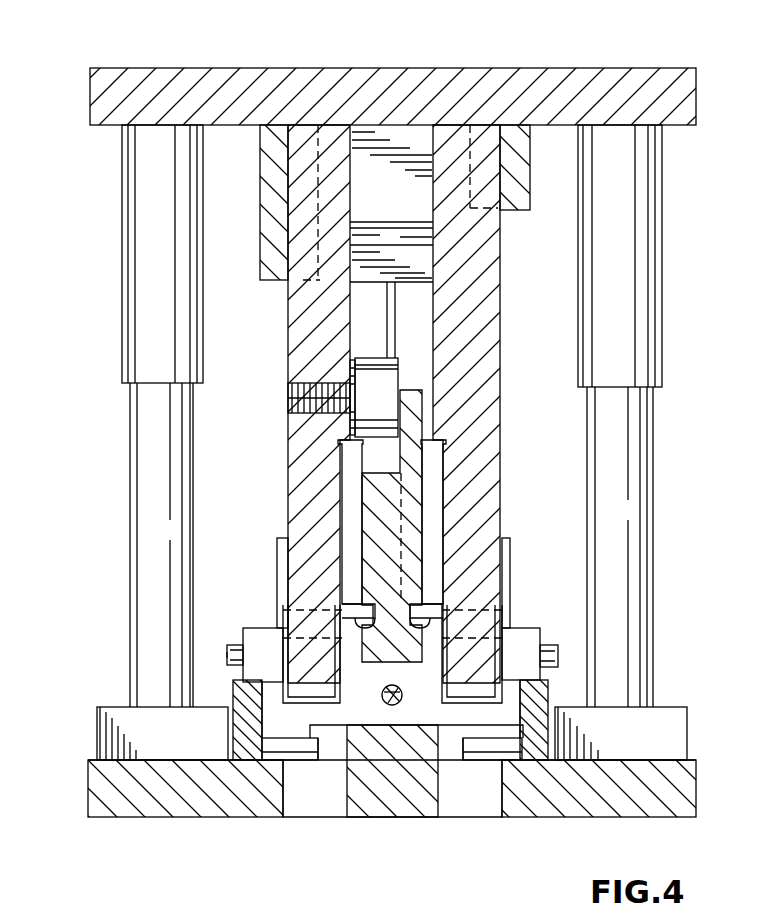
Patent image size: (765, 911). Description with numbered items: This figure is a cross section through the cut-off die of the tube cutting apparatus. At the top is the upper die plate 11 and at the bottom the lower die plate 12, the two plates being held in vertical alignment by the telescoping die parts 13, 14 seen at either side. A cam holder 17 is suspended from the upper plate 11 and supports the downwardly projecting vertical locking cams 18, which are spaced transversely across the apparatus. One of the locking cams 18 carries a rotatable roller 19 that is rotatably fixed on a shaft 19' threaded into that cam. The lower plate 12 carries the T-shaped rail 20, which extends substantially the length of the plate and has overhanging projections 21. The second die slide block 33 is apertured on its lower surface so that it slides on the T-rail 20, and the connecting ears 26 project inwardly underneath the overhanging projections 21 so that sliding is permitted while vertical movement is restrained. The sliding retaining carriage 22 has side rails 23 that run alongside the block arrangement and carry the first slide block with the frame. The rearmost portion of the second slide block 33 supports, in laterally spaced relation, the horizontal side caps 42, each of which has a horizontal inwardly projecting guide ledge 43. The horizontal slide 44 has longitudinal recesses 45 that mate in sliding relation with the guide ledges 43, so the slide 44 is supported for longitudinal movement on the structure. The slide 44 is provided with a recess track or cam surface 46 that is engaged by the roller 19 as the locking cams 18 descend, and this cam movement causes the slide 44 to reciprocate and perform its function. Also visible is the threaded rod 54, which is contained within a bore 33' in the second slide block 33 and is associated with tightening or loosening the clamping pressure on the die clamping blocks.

The upper die plate 11 is at (424, 78).
The lower die plate 12 is at (185, 797).
The telescoping die part 13 is at (152, 240).
The telescoping die part 14 is at (148, 528).
The cam holder 17 is at (268, 135).
The locking cam 18 is at (290, 322).
The roller 19 is at (389, 359).
The shaft 19' is at (291, 387).
The T-shaped rail 20 is at (332, 740).
The overhanging projection 21 is at (310, 727).
The retaining carriage 22 is at (552, 687).
The side rail 23 is at (246, 750).
The connecting ear 26 is at (300, 748).
The second die slide block 33 is at (407, 663).
The bore 33' is at (412, 707).
The side cap 42 is at (277, 553).
The guide ledge 43 is at (357, 620).
The horizontal slide 44 is at (413, 497).
The longitudinal recess 45 is at (365, 610).
The cam surface 46 is at (370, 463).
The threaded rod 54 is at (392, 706).